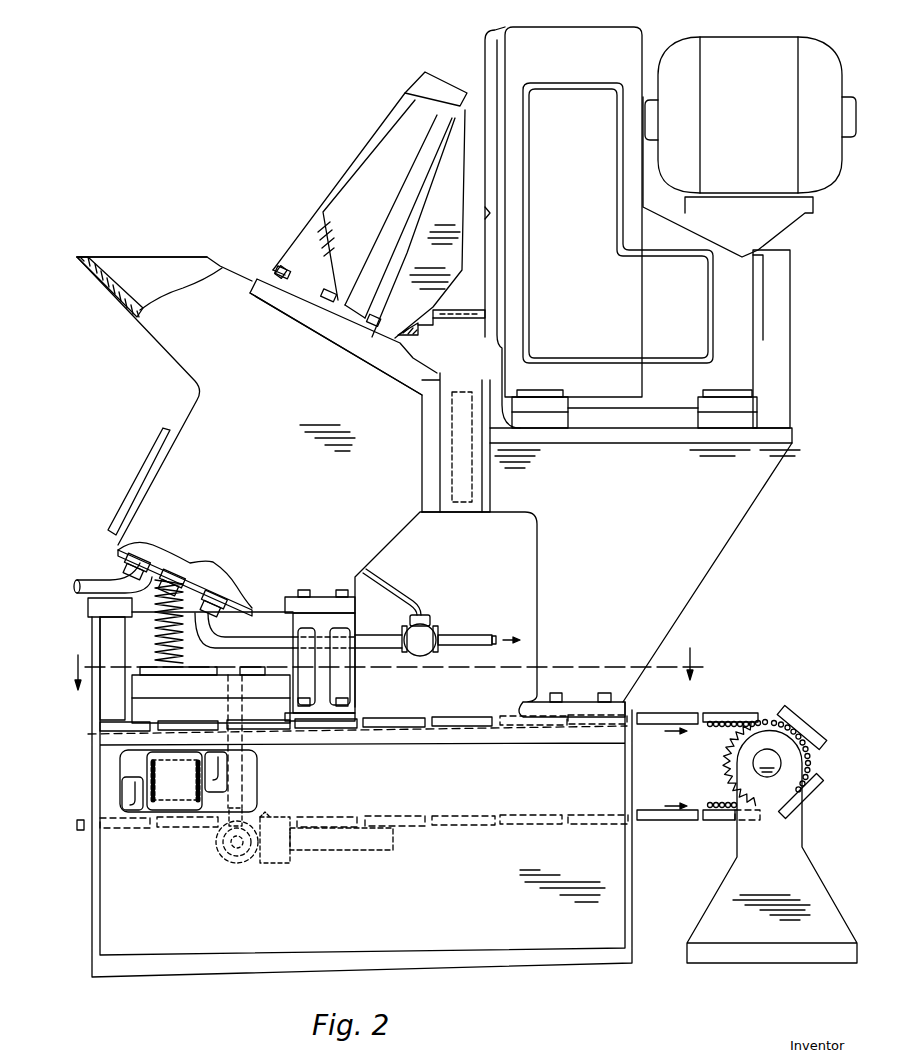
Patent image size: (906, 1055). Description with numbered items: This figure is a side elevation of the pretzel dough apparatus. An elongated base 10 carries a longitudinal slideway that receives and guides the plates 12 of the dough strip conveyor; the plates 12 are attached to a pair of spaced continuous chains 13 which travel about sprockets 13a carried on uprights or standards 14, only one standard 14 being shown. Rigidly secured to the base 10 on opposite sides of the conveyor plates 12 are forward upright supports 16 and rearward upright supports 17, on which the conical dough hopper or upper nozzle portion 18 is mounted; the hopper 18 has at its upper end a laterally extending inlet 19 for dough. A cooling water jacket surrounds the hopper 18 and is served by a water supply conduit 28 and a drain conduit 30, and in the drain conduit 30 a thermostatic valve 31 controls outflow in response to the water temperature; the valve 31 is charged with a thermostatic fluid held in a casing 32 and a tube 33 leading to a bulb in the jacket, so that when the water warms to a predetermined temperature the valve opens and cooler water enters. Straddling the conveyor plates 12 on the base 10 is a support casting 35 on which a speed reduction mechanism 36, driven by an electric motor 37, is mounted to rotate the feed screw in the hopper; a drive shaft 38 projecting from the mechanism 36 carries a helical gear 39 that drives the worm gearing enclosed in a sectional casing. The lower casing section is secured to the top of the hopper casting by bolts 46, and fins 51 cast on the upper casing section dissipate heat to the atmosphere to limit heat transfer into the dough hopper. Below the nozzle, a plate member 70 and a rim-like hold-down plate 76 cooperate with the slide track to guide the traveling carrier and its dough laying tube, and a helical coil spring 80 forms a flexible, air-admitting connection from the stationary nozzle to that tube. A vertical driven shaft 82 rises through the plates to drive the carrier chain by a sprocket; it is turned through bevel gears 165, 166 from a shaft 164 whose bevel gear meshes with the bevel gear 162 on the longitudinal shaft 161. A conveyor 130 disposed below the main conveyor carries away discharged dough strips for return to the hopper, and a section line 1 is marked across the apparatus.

The section line 1 is at (84, 652).
The base 10 is at (522, 945).
The plates 12 is at (445, 730).
The continuous chains 13 is at (722, 730).
The sprockets 13a is at (738, 770).
The uprights or standards 14 is at (792, 847).
The forward upright supports 16 is at (121, 700).
The rearward upright supports 17 is at (357, 692).
The dough hopper 18 is at (283, 456).
The inlet 19 is at (165, 258).
The water supply conduit 28 is at (93, 577).
The drain conduit 30 is at (268, 625).
The thermostatic valve 31 is at (427, 652).
The casing 32 is at (430, 617).
The tube 33 is at (395, 583).
The support casting 35 is at (641, 544).
The speed reduction mechanism 36 is at (611, 284).
The electric motor 37 is at (758, 123).
The drive shaft 38 is at (470, 320).
The helical gear 39 is at (422, 328).
The bolts 46 is at (280, 296).
The fins 51 is at (373, 150).
The plate member 70 is at (275, 698).
The hold-down plate 76 is at (192, 672).
The helical coil spring 80 is at (182, 578).
The vertical driven shaft 82 is at (240, 773).
The conveyor 130 is at (170, 804).
The shaft 161 is at (345, 852).
The bevel gear 162 is at (260, 858).
The shaft 164 is at (218, 858).
The bevel gear 165 is at (232, 860).
The bevel gear 166 is at (252, 803).